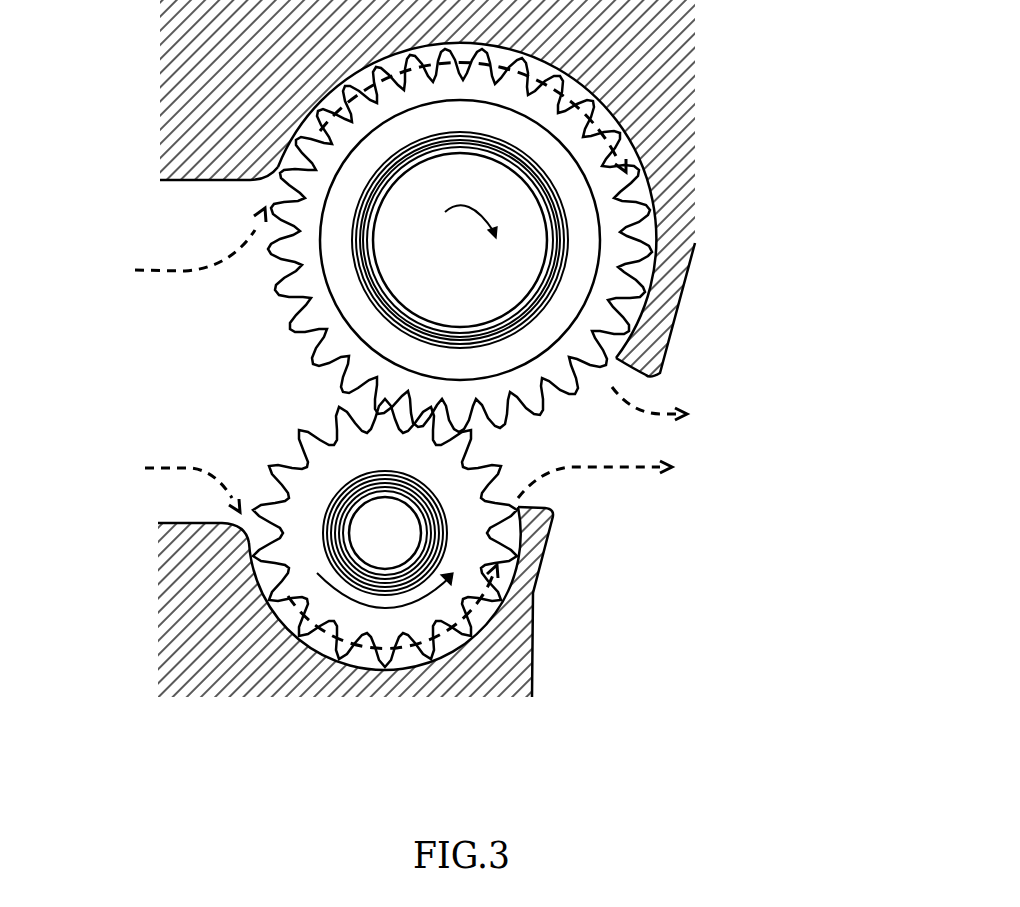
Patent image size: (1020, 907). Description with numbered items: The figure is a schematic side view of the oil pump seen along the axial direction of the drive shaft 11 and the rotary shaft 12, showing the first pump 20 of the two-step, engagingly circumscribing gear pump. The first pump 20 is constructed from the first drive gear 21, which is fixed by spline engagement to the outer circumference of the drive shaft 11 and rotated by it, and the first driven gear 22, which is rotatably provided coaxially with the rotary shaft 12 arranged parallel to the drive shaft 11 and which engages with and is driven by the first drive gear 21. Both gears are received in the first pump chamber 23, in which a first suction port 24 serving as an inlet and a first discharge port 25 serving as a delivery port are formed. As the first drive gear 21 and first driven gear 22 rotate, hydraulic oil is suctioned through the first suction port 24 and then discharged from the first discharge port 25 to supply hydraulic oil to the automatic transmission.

The drive shaft 11 is at (515, 233).
The rotary shaft 12 is at (400, 537).
The first pump 20 is at (729, 103).
The first drive gear 21 is at (640, 193).
The first driven gear 22 is at (507, 543).
The first pump chamber 23 is at (306, 403).
The first suction port 24 is at (175, 230).
The first discharge port 25 is at (668, 437).